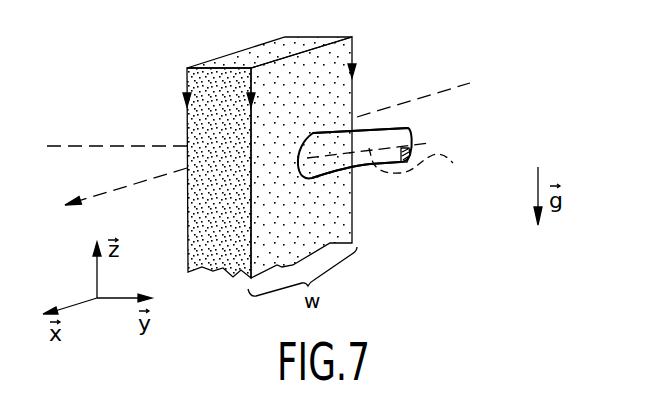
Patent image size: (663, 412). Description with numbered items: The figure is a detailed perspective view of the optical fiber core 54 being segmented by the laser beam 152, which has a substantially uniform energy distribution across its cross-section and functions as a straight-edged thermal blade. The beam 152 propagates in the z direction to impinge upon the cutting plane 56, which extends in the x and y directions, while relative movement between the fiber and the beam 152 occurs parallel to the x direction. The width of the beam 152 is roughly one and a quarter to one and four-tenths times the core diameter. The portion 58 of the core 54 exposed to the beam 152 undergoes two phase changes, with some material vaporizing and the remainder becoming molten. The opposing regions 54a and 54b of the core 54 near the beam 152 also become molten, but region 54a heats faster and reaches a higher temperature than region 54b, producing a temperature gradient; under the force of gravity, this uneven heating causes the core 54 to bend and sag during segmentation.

The beam 152 is at (187, 80).
The cutting plane 56 is at (124, 151).
The core 54 is at (393, 132).
The region of the core 54a is at (313, 133).
The region of the core 54b is at (312, 178).
The portion of the core exposed to the beam 58 is at (423, 171).